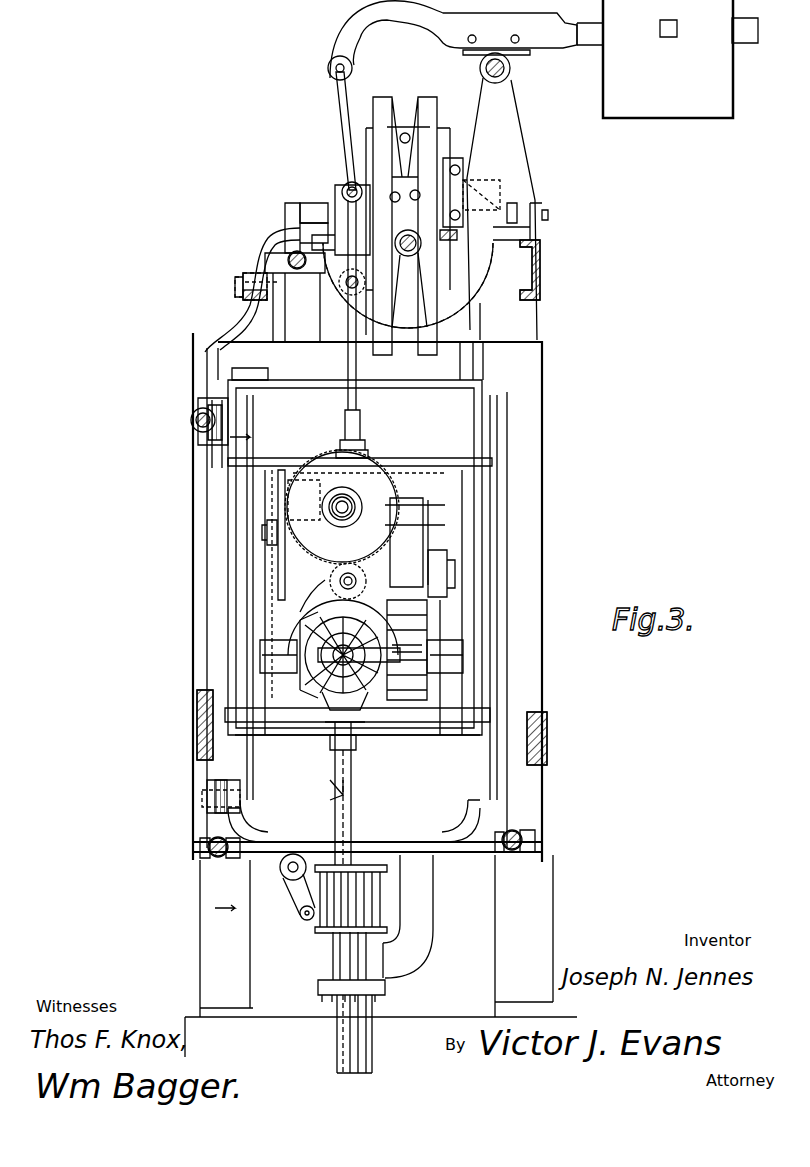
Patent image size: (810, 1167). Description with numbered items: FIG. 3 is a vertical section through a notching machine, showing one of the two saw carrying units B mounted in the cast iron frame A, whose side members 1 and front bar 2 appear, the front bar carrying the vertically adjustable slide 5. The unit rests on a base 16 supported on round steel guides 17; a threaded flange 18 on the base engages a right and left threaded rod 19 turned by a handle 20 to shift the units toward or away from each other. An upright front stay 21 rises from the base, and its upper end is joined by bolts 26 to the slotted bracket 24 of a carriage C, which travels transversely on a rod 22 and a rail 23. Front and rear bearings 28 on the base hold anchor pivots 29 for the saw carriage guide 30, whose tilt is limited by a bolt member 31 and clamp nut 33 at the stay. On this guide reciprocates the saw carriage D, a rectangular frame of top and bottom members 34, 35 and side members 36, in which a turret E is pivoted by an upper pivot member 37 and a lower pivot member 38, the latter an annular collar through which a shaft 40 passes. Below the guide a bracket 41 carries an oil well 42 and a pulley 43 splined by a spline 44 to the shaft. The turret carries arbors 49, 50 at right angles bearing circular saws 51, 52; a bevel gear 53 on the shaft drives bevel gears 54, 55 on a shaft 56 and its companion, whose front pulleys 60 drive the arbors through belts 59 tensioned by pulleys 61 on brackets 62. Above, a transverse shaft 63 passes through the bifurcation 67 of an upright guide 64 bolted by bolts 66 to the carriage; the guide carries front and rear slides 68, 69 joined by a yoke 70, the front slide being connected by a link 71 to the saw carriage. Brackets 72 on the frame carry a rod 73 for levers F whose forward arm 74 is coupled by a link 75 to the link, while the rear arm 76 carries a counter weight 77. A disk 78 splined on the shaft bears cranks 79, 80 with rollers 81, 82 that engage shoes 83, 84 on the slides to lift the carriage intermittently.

The side members 1 is at (210, 915).
The front bar 2 is at (197, 732).
The slide 5 is at (249, 673).
The base 16 is at (207, 790).
The guides 17 is at (212, 855).
The downwardly extending flange 18 is at (290, 885).
The screw threaded rod 19 is at (280, 872).
The handle 20 is at (300, 918).
The front stay 21 is at (212, 450).
The rod 22 is at (285, 240).
The rail 23 is at (541, 283).
The brackets 24 is at (258, 262).
The bolts 26 is at (235, 280).
The front and rear bearings 28 is at (225, 825).
The anchor pivots 29 is at (202, 800).
The saw carriage guide 30 is at (240, 485).
The bolt member 31 is at (192, 416).
The clamp nut 33 is at (198, 428).
The top member 34 is at (330, 372).
The bottom member 35 is at (432, 725).
The side members 36 is at (250, 505).
The pivot member 37 is at (340, 448).
The pivot member 38 is at (350, 700).
The shaft 40 is at (352, 778).
The bracket 41 is at (413, 928).
The oil tube or well 42 is at (372, 1000).
The pulley 43 is at (380, 912).
The spline 44 is at (320, 795).
The saw carrying shaft or arbor 49 is at (272, 535).
The saw carrying shaft or arbor 50 is at (345, 505).
The circular saw 51 is at (280, 580).
The circular saw 52 is at (392, 505).
The bevel gear 53 is at (325, 690).
The bevel gear 54 is at (300, 630).
The bevel gear 55 is at (384, 640).
The shaft 56 is at (370, 660).
The belt or band 59 is at (318, 612).
The front pulleys 60 is at (300, 648).
The belt tightening pulleys 61 is at (332, 585).
The brackets 62 is at (450, 575).
The shaft 63 is at (420, 245).
The upright guides 64 is at (373, 118).
The bolts 66 is at (398, 200).
The bifurcation 67 is at (420, 312).
The front slide 68 is at (366, 138).
The rear slide 69 is at (440, 150).
The cross bar or yoke 70 is at (410, 138).
The link 71 is at (350, 330).
The brackets 72 is at (520, 137).
The rod or shaft 73 is at (508, 75).
The forwardly extending arm 74 is at (338, 33).
The link 75 is at (343, 148).
The rearwardly extending arm 76 is at (570, 47).
The counter weight 77 is at (682, 108).
The wheel or disk 78 is at (482, 265).
The wrist pin or crank 79 is at (312, 205).
The wrist pin or crank 80 is at (345, 295).
The anti-friction roller 81 is at (340, 192).
The anti-friction roller 82 is at (340, 300).
The shoe 83 is at (500, 188).
The shoe 84 is at (310, 275).
The frame A is at (528, 428).
The saw carrying unit B is at (195, 402).
The carriage C is at (300, 212).
The saw carriage D is at (360, 460).
The turret E is at (450, 600).
The lever F is at (470, 56).